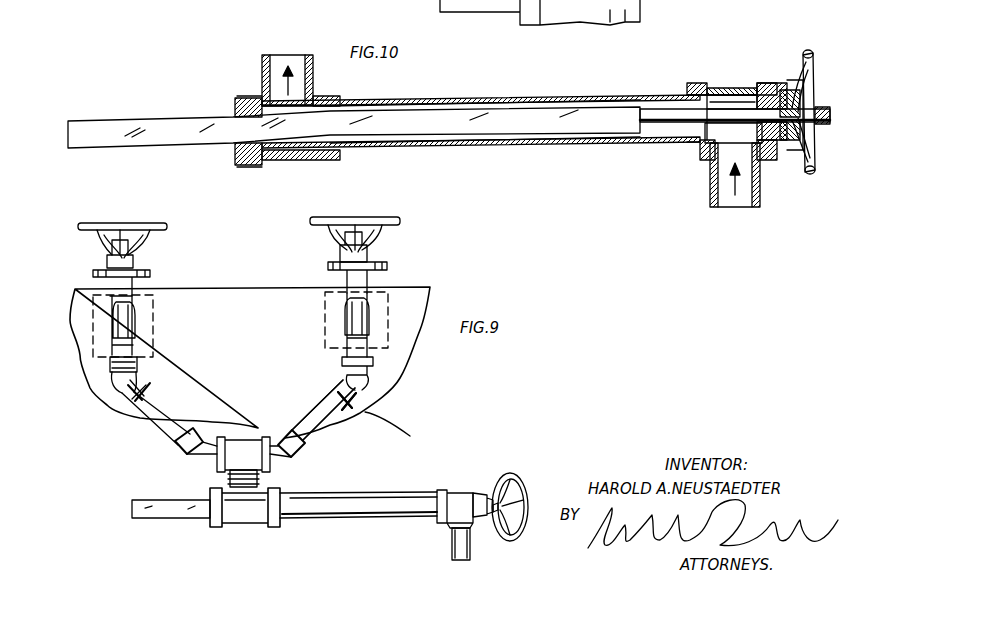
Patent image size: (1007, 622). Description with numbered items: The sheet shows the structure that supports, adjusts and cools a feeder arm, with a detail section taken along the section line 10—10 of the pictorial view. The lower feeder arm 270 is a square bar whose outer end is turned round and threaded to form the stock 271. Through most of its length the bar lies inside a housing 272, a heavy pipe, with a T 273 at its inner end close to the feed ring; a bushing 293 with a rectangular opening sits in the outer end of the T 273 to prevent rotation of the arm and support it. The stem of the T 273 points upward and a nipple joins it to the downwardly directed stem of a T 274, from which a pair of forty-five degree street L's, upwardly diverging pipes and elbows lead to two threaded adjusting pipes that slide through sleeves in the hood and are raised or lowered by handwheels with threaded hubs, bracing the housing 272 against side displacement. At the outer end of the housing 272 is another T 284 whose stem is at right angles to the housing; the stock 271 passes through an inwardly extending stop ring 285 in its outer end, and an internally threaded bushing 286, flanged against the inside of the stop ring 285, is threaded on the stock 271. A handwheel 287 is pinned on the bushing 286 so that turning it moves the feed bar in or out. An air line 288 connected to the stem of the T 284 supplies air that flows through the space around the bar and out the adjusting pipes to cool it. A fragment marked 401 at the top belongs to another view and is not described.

In FIG. 9, the section line 10 is at (109, 516).
In FIG. 10, the lower feeder arm 270 is at (160, 99).
In FIG. 9, the lower feeder arm 270 is at (165, 514).
In FIG. 10, the stock 271 is at (665, 104).
In FIG. 10, the housing 272 is at (436, 101).
In FIG. 9, the housing 272 is at (388, 490).
In FIG. 10, the T 273 is at (278, 162).
In FIG. 9, the T 274 is at (245, 440).
In FIG. 10, the T 284 is at (700, 157).
In FIG. 9, the T 284 is at (447, 522).
In FIG. 10, the stop ring 285 is at (780, 88).
In FIG. 10, the internally threaded bushing 286 is at (741, 89).
In FIG. 9, the internally threaded bushing 286 is at (483, 505).
In FIG. 10, the handwheel with bored hub 287 is at (812, 58).
In FIG. 9, the handwheel with bored hub 287 is at (515, 475).
In FIG. 10, the air line 288 is at (735, 210).
In FIG. 9, the air line 288 is at (452, 552).
In FIG. 10, the bushing 293 is at (240, 147).
In FIG. 10, the partial component 401 is at (540, 12).